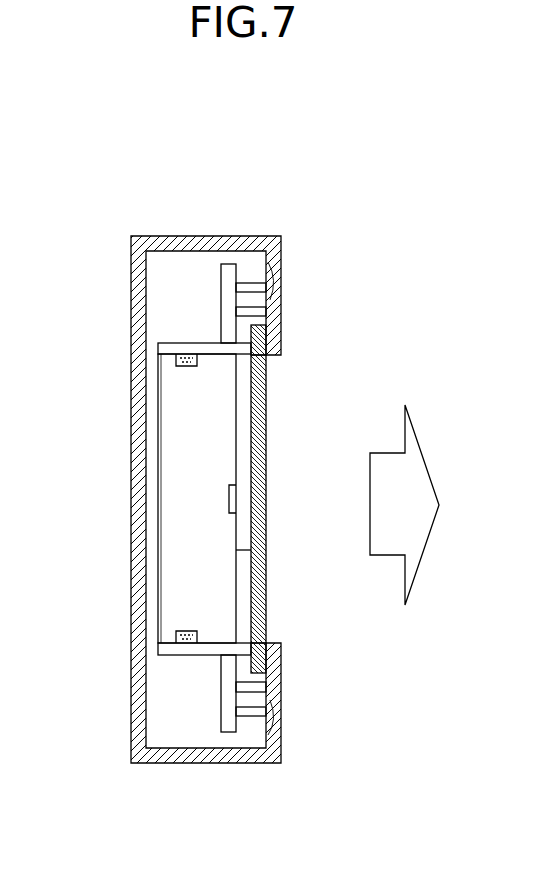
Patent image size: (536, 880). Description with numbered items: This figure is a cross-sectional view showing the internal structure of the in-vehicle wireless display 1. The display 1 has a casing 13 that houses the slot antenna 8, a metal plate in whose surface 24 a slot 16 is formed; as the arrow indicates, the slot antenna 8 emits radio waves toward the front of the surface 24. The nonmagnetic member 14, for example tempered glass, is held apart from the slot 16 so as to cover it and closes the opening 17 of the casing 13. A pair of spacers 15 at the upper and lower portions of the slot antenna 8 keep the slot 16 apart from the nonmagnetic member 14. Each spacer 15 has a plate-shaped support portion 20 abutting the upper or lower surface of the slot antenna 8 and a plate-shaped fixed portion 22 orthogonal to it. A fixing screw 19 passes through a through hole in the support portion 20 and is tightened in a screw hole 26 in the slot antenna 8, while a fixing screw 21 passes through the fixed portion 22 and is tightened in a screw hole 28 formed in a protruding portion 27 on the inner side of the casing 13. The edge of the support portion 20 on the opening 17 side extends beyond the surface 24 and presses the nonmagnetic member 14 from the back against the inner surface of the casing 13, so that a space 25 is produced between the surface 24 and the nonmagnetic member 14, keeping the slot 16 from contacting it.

The display 1 is at (158, 172).
The slot antenna 8 is at (190, 512).
The casing 13 is at (134, 478).
The nonmagnetic member 14 is at (268, 425).
The spacer 15 is at (215, 325).
The slot 16 is at (232, 500).
The opening 17 is at (272, 383).
The fixing screw 19 is at (175, 346).
The support portion 20 is at (157, 348).
The fixing screw 21 is at (256, 286).
The fixed portion 22 is at (222, 268).
The surface 24 is at (252, 563).
The space 25 is at (270, 457).
The screw hole 26 is at (185, 365).
The protruding portion 27 is at (270, 292).
The screw hole 28 is at (262, 305).